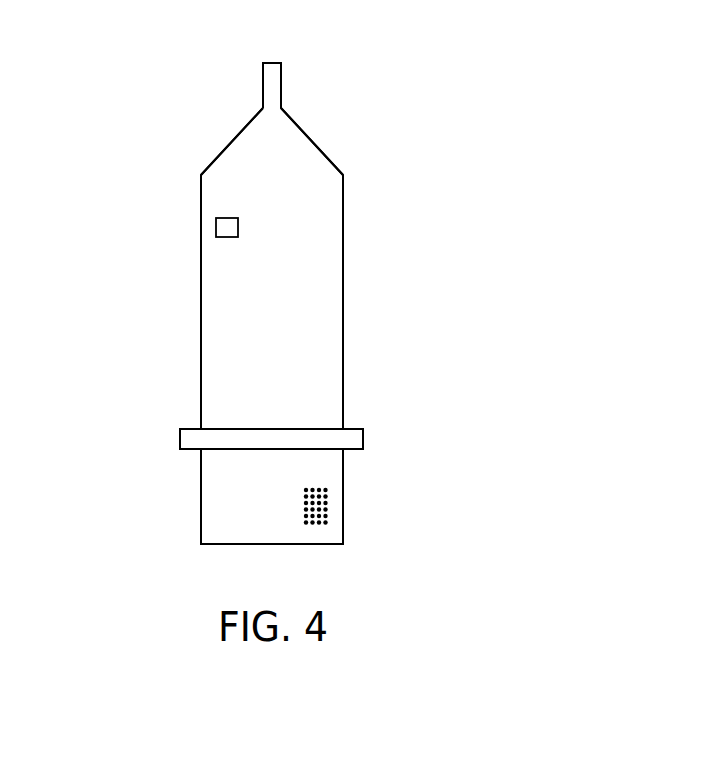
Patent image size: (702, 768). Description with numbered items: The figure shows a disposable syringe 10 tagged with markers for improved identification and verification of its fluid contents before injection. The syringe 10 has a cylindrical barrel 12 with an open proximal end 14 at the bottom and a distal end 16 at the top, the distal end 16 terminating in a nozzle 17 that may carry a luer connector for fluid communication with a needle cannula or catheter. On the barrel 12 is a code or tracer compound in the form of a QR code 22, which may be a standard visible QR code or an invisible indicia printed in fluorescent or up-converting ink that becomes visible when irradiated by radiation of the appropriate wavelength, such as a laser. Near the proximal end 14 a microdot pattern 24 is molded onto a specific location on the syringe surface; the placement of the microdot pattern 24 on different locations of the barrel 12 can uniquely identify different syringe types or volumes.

The disposable syringe 10 is at (376, 251).
The cylindrical barrel 12 is at (343, 336).
The open proximal end 14 is at (343, 528).
The distal end 16 is at (337, 118).
The nozzle 17 is at (282, 84).
The QR code 22 is at (216, 226).
The microdot pattern 24 is at (328, 500).